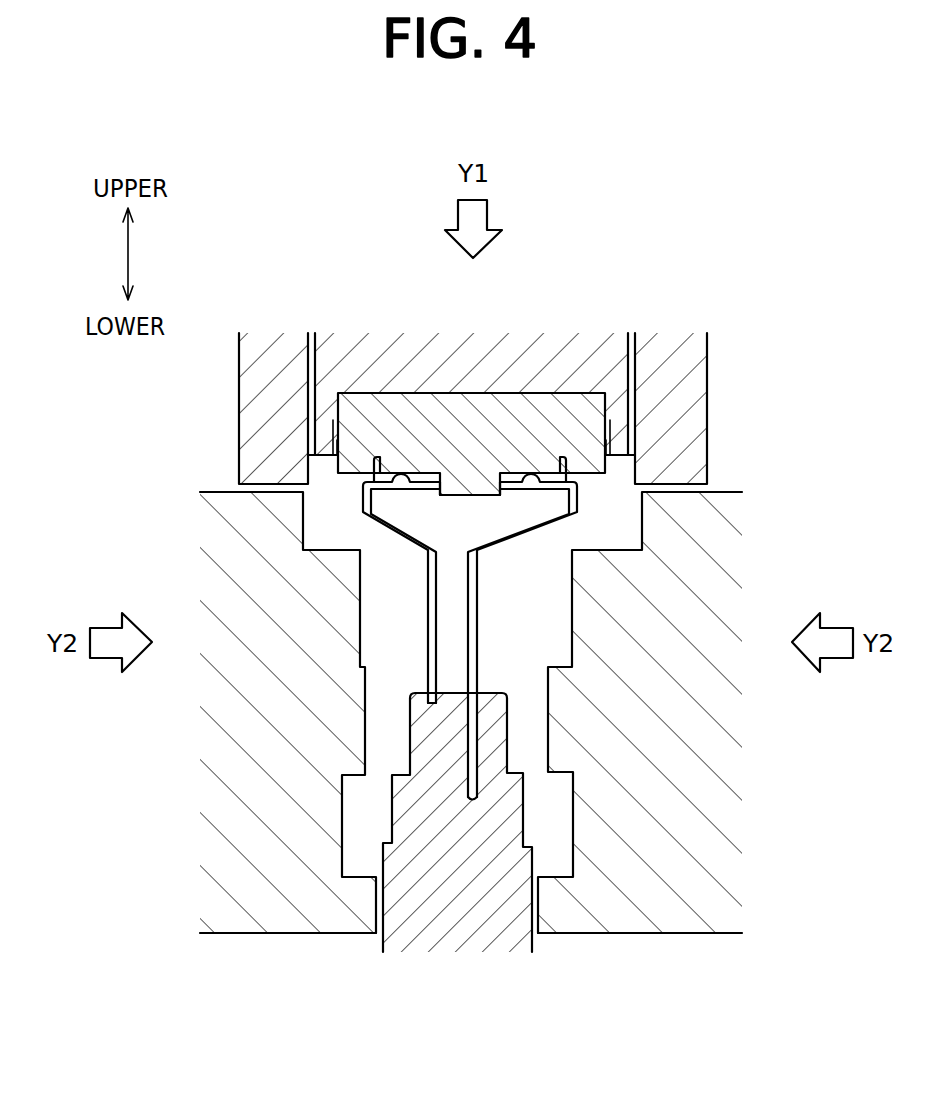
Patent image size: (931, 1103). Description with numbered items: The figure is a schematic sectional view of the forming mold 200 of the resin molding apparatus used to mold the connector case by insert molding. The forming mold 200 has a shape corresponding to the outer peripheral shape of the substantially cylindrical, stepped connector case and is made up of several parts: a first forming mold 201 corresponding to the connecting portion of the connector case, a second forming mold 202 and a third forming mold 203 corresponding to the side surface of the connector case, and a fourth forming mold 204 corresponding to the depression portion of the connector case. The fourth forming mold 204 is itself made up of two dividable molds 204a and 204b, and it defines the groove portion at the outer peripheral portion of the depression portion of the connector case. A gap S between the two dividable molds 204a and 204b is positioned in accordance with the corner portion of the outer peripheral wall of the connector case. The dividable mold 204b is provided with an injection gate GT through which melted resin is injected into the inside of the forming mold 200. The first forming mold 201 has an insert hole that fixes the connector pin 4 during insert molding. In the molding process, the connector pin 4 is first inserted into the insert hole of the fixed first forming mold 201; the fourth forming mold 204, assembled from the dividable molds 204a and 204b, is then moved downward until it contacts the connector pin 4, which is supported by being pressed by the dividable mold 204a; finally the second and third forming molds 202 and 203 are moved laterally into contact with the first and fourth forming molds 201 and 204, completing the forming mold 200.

The connector pin 4 is at (428, 598).
The forming mold 200 is at (718, 938).
The first forming mold 201 is at (410, 927).
The second forming mold 202 is at (600, 908).
The third forming mold 203 is at (268, 906).
The fourth forming mold 204 is at (417, 384).
The dividable mold 204a is at (513, 427).
The dividable mold 204b is at (427, 362).
The gap S is at (345, 522).
The injection gate GT is at (313, 430).